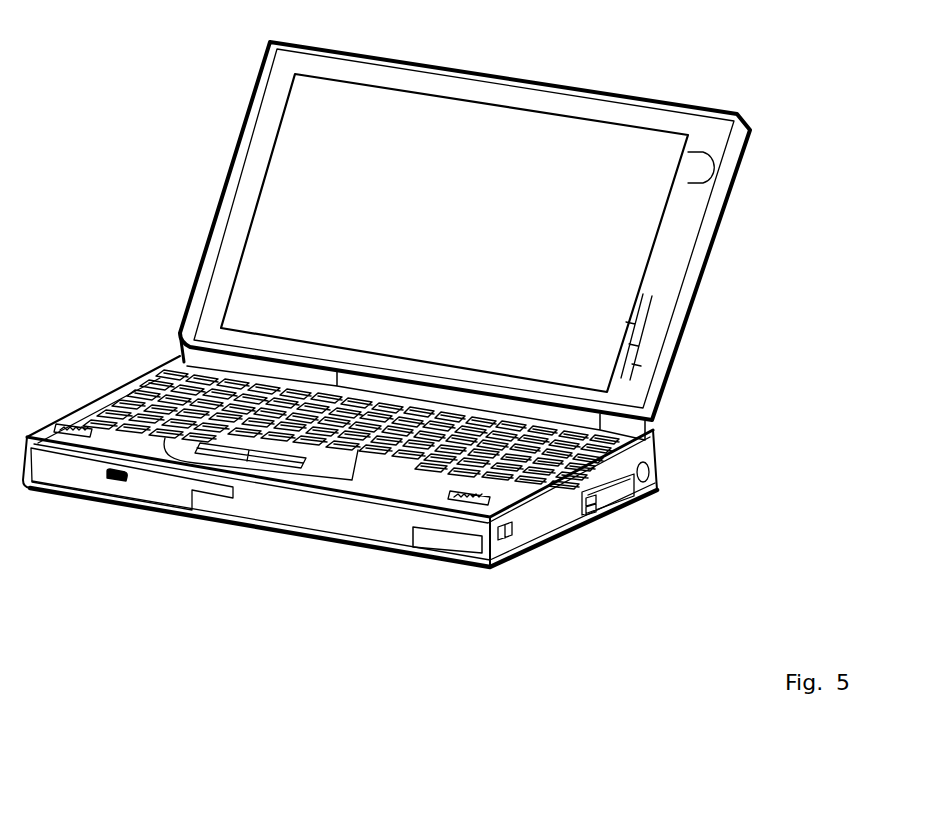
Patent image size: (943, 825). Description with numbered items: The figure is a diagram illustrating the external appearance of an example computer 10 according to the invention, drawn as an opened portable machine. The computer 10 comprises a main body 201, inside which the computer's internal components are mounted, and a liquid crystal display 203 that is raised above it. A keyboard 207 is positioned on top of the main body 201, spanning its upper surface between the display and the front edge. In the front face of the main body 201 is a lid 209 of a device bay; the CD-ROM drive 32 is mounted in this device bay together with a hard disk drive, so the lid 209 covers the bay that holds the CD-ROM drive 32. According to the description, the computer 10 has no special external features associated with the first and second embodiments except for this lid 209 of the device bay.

The computer 10 is at (465, 233).
The liquid crystal display 203 is at (454, 201).
The keyboard 207 is at (335, 405).
The CD-ROM drive 32 is at (132, 514).
The lid 209 is at (447, 574).
The main body 201 is at (340, 489).